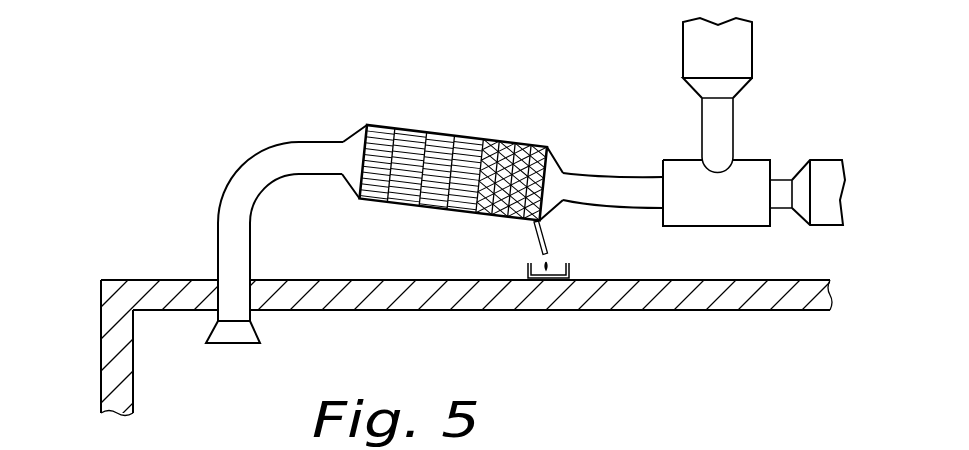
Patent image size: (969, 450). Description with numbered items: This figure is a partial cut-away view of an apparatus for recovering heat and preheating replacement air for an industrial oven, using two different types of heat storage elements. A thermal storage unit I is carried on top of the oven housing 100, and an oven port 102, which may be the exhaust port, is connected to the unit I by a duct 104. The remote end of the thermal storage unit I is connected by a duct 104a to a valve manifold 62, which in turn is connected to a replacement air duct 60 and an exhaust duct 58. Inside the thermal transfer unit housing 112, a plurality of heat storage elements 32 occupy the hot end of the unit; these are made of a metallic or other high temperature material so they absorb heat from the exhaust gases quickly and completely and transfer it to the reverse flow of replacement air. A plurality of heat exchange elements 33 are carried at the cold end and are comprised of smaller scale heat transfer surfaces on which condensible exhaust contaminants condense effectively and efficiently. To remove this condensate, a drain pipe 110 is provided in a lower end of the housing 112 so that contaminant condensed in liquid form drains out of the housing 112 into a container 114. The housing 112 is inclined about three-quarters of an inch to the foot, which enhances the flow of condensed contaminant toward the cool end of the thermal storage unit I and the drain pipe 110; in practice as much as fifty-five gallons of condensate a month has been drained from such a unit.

The oven housing 100 is at (101, 331).
The oven port 102 is at (250, 344).
The duct 104 is at (287, 119).
The duct 104a is at (615, 176).
The thermal transfer unit housing 112 is at (455, 146).
The heat storage elements 32 is at (437, 108).
The heat exchange elements 33 is at (525, 148).
The thermal storage unit I is at (469, 136).
The drain pipe 110 is at (538, 240).
The container 114 is at (556, 280).
The valve manifold 62 is at (757, 159).
The replacement air duct 60 is at (752, 30).
The exhaust duct 58 is at (822, 228).